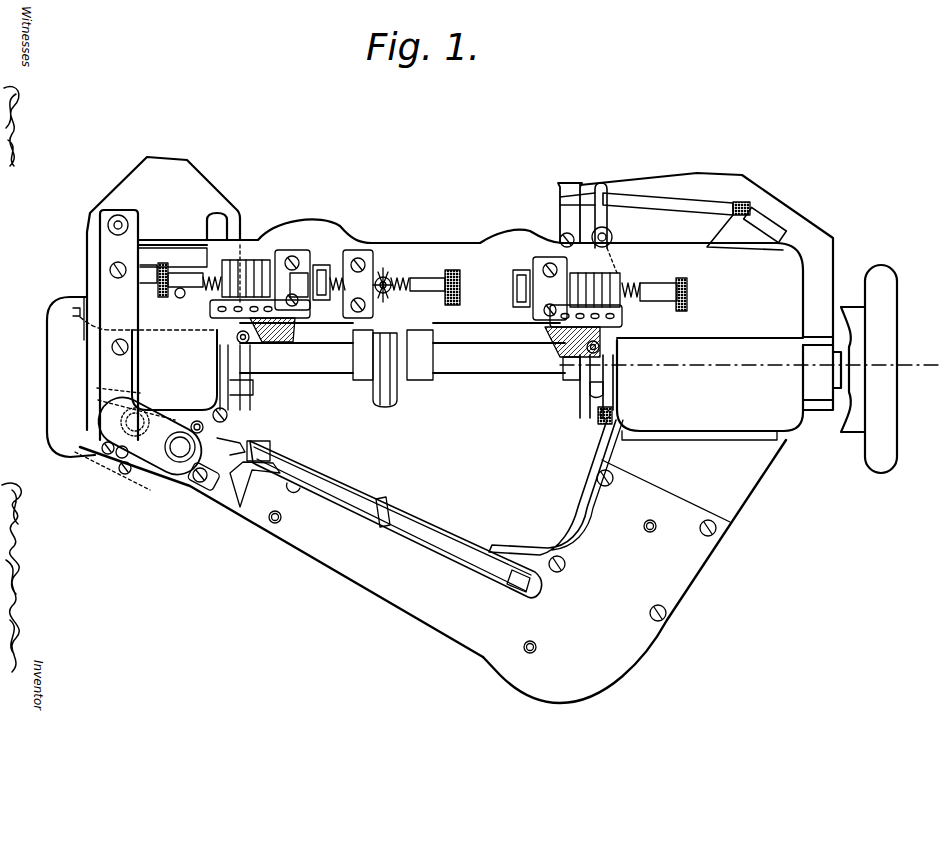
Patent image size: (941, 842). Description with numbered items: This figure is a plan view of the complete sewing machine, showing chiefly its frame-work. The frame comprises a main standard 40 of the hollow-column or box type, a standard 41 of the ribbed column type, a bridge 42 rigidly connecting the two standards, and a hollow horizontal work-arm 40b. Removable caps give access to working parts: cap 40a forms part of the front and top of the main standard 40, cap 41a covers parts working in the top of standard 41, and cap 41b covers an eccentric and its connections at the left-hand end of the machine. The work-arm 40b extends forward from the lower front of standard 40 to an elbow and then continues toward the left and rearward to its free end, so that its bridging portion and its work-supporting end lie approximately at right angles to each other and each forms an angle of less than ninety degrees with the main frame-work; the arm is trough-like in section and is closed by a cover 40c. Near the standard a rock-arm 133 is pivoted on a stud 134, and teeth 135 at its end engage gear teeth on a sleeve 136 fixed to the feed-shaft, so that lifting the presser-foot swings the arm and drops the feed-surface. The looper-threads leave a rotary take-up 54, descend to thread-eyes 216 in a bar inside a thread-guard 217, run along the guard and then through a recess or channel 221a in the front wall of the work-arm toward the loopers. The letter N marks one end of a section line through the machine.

The main standard 40 is at (757, 294).
The cap 40a is at (716, 422).
The work-arm 40b is at (747, 496).
The cover 40c is at (457, 627).
The standard 41 is at (84, 278).
The cap 41a is at (148, 363).
The cap 41b is at (63, 437).
The bridge 42 is at (481, 316).
The rotary take-up 54 is at (580, 400).
The rock-arm 133 is at (635, 200).
The stud 134 is at (578, 186).
The teeth 135 is at (753, 205).
The sleeve 136 is at (768, 222).
The thread-eyes 216 is at (598, 425).
The thread-guard 217 is at (571, 503).
The recess or channel 221a is at (318, 560).
The section line N—O N is at (565, 360).